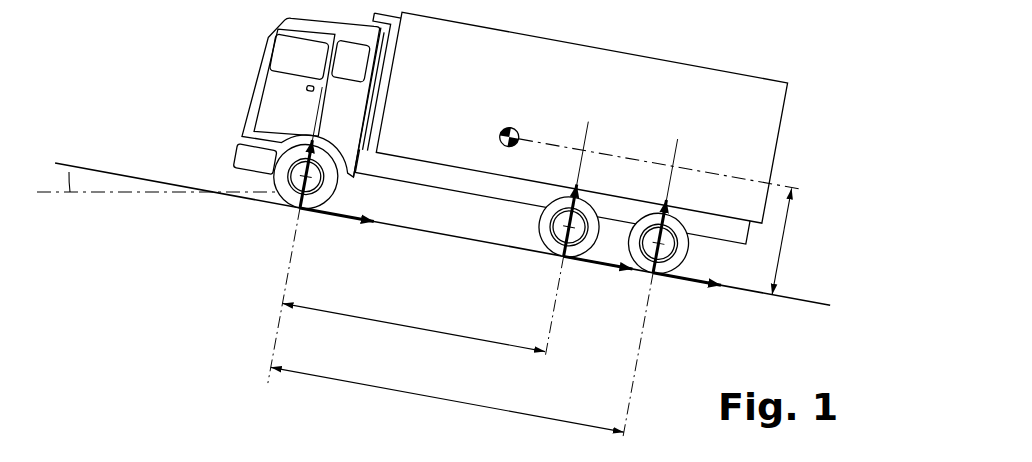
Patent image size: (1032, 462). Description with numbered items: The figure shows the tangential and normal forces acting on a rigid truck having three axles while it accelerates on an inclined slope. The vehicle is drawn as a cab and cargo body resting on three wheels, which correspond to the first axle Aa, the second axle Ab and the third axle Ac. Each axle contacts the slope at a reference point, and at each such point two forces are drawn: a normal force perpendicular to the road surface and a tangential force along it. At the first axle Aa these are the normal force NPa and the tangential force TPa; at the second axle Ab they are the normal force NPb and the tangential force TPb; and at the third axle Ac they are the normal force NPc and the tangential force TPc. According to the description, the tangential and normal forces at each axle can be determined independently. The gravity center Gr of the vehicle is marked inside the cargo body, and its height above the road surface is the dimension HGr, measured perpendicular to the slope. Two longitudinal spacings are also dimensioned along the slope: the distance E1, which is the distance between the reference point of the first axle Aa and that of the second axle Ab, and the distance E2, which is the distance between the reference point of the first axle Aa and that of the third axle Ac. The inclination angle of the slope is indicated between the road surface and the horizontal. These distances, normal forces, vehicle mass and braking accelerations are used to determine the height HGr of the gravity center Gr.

The first axle Aa is at (306, 181).
The second axle Ab is at (566, 178).
The third axle Ac is at (677, 246).
The gravity center Gr is at (650, 147).
The normal force at the first reference point NPa is at (326, 166).
The tangential force at the first reference point TPa is at (333, 233).
The normal force at the second reference point NPb is at (569, 211).
The tangential force at the second reference point TPb is at (601, 285).
The normal force at the third reference point NPc is at (682, 228).
The tangential force at the third reference point TPc is at (700, 301).
The distance d1 E1 is at (416, 315).
The distance d2 E2 is at (442, 414).
The height of the gravity center HGr is at (806, 245).